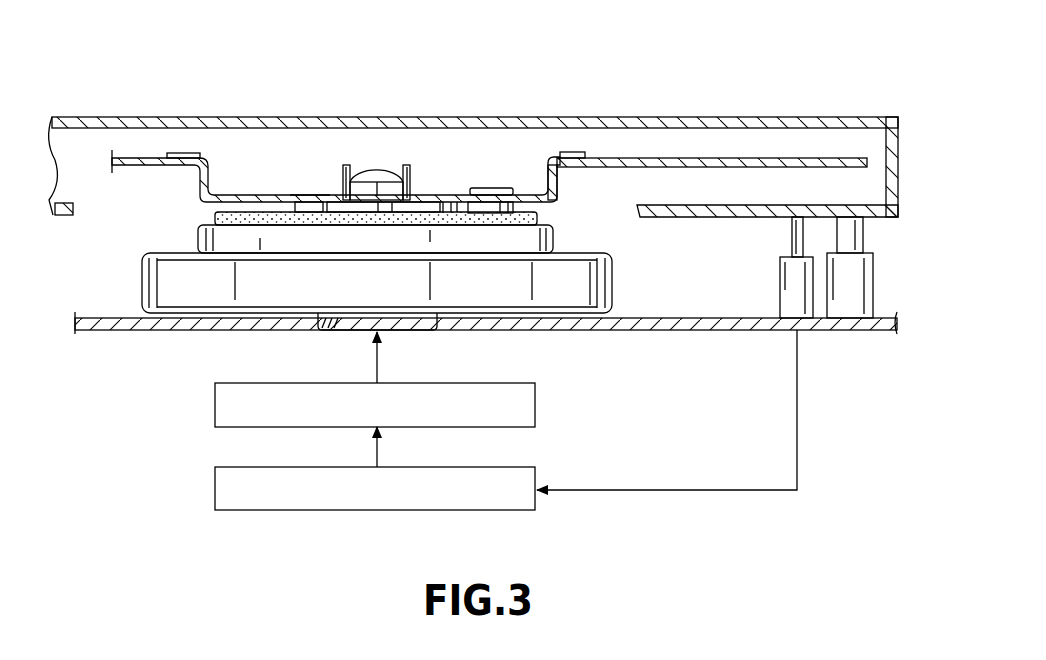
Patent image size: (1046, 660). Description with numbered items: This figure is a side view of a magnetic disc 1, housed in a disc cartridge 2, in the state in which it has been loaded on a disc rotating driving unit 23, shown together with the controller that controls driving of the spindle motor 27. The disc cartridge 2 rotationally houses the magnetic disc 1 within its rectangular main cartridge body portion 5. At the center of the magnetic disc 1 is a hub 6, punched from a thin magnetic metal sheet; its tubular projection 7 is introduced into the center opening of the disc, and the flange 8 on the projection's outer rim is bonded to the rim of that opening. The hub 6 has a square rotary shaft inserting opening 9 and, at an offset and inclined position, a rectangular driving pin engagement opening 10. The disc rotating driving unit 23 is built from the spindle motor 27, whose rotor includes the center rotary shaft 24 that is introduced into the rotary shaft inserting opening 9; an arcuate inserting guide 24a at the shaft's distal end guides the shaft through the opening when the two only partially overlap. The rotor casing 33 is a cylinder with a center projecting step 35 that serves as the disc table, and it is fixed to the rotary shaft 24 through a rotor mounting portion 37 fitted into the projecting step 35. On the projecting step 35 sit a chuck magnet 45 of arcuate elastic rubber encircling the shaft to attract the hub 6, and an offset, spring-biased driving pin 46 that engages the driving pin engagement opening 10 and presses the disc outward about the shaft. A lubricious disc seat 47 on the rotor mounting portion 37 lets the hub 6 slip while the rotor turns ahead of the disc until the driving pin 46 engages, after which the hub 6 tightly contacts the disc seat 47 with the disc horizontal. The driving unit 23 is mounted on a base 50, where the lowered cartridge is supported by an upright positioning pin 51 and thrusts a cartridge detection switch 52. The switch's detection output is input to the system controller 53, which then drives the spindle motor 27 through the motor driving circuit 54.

The magnetic disc 1 is at (672, 158).
The disc cartridge 2 is at (765, 105).
The main cartridge body portion 5 is at (899, 121).
The hub 6 is at (200, 181).
The projection 7 is at (556, 186).
The flange 8 is at (566, 155).
The rotary shaft inserting opening 9 is at (406, 166).
The driving pin engagement opening 10 is at (479, 188).
The disc rotating driving unit 23 is at (138, 278).
The rotary shaft 24 is at (346, 165).
The inserting guide 24a is at (377, 188).
The spindle motor 27 is at (556, 298).
The rotor casing 33 is at (205, 296).
The projecting step 35 is at (200, 241).
The rotor mounting portion 37 is at (300, 195).
The chuck magnet 45 is at (215, 215).
The driving pin 46 is at (503, 202).
The disc seat 47 is at (310, 202).
The base 50 is at (112, 330).
The positioning pin 51 is at (848, 305).
The cartridge detection switch 52 is at (798, 305).
The system controller 53 is at (215, 482).
The motor driving circuit 54 is at (215, 407).